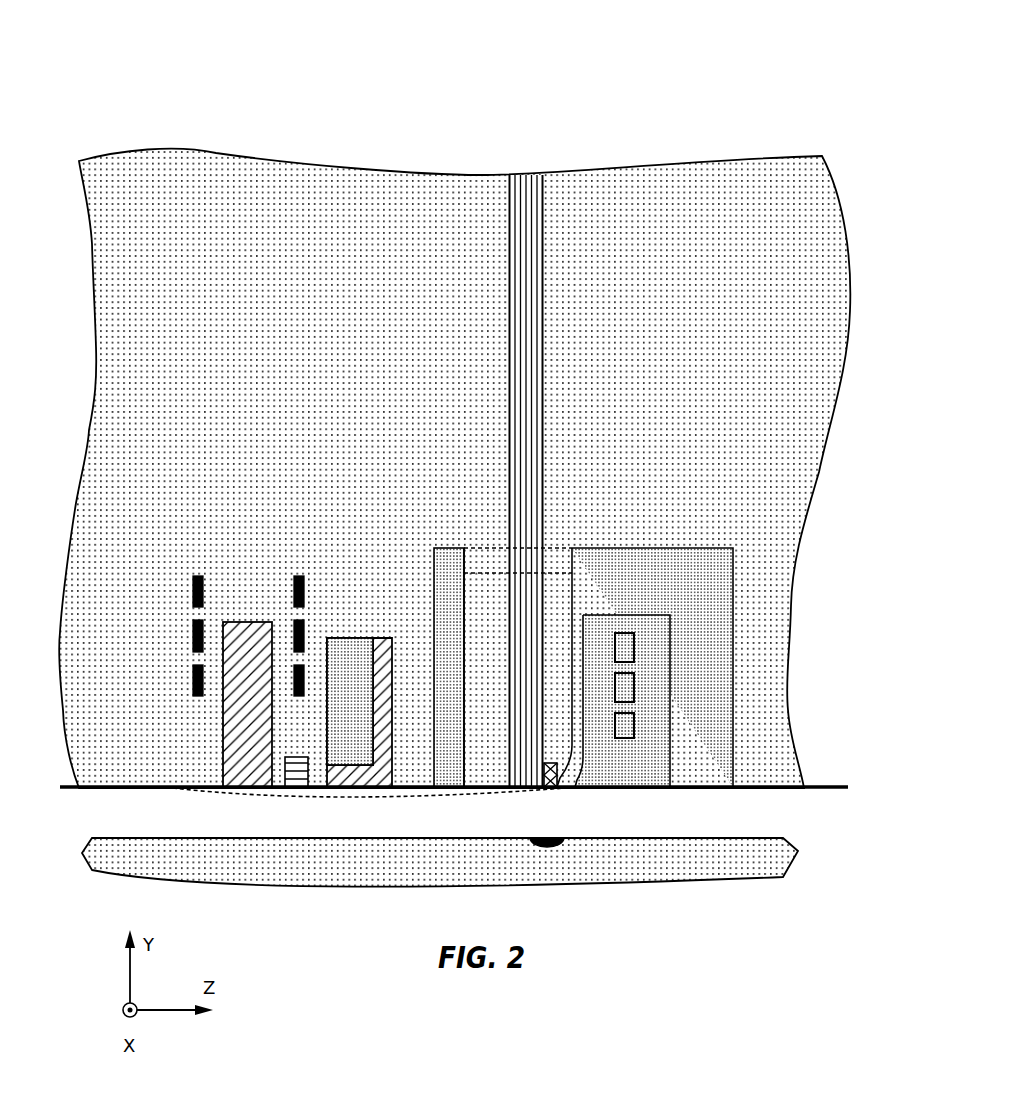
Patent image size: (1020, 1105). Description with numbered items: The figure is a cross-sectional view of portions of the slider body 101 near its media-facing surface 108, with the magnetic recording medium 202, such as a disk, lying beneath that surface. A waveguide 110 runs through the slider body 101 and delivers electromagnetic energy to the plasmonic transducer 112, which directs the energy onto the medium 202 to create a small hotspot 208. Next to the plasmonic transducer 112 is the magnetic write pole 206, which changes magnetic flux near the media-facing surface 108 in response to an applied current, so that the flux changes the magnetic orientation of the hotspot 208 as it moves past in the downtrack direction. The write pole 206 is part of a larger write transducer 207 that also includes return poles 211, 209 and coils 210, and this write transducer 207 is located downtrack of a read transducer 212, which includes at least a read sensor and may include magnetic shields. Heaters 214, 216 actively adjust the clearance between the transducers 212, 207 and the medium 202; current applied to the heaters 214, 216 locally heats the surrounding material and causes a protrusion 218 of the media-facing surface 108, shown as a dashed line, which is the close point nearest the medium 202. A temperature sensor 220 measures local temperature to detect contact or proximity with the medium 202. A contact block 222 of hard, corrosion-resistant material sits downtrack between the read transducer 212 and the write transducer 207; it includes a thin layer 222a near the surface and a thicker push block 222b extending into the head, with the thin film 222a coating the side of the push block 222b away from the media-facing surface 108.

The slider body 101 is at (454, 402).
The media-facing surface 108 is at (810, 788).
The waveguide 110 is at (530, 175).
The plasmonic transducer 112 is at (550, 788).
The magnetic recording medium 202 is at (180, 860).
The magnetic write pole 206 is at (577, 788).
The write transducer 207 is at (686, 487).
The hotspot 208 is at (545, 848).
The return pole 209 is at (470, 790).
The coils 210 is at (628, 760).
The return pole 211 is at (700, 772).
The read transducer 212 is at (253, 760).
The heater 214 is at (302, 575).
The heater 216 is at (198, 575).
The protrusion 218 is at (408, 797).
The temperature sensor 220 is at (297, 787).
The contact block 222 is at (362, 687).
The thin layer 222a is at (382, 788).
The push block 222b is at (362, 652).